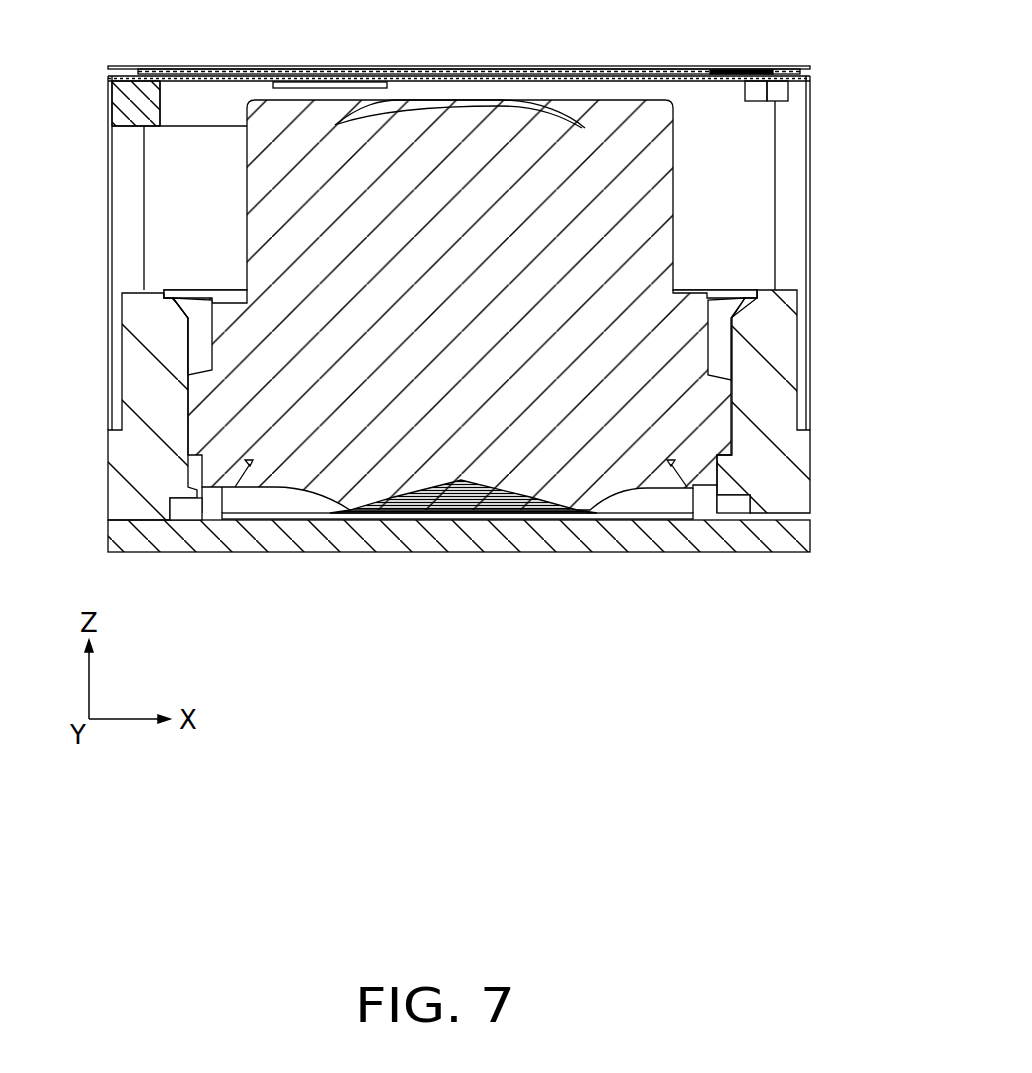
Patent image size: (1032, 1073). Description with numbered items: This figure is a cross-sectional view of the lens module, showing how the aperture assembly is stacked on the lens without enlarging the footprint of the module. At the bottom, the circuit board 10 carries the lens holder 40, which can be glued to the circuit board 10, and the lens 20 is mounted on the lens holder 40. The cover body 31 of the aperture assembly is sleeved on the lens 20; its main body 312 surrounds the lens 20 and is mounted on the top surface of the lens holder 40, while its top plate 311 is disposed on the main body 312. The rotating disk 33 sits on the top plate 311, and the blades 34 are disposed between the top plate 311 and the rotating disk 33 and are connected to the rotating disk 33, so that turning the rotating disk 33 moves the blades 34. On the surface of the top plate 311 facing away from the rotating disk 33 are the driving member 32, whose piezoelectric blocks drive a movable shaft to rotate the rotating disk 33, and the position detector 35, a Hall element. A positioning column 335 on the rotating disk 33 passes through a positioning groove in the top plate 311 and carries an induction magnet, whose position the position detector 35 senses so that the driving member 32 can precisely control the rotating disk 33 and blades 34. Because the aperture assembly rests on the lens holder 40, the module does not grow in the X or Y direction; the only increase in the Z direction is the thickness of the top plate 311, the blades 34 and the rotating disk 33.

The circuit board 10 is at (200, 548).
The lens 20 is at (265, 225).
The cover body 31 is at (519, 253).
The top plate 311 is at (697, 81).
The main body 312 is at (881, 123).
The driving member 32 is at (118, 109).
The rotating disk 33 is at (108, 67).
The blades 34 is at (192, 70).
The positioning column 335 is at (757, 85).
The position detector 35 is at (778, 85).
The lens holder 40 is at (145, 455).